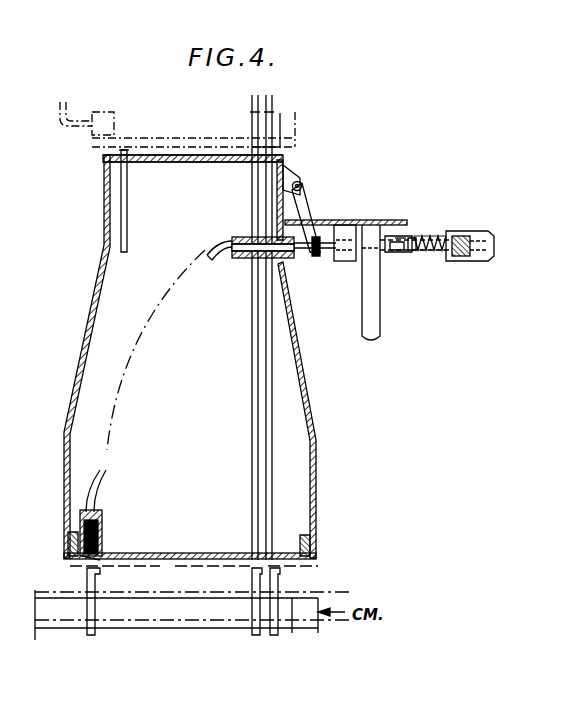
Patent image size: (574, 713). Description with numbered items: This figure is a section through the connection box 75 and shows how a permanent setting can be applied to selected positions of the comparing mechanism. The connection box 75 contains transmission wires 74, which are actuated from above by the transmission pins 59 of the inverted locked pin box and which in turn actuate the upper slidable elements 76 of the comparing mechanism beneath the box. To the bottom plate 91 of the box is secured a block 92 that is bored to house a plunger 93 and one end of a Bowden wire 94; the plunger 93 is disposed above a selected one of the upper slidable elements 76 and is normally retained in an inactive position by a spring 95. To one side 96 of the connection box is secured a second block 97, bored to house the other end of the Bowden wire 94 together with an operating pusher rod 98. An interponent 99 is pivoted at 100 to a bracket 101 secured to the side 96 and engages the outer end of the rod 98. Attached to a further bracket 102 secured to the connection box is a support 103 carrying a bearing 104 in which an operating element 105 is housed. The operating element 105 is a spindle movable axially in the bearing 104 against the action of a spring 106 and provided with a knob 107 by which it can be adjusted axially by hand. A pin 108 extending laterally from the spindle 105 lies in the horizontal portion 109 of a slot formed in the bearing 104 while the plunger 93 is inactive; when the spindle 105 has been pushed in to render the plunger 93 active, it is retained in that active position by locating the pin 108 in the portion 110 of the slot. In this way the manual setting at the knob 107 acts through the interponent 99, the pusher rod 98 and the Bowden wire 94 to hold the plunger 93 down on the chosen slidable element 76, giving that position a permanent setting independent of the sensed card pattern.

The transmission pins 59 is at (266, 124).
The transmission wires 74 is at (121, 203).
The connection box 75 is at (86, 352).
The upper slidable elements 76 is at (88, 577).
The bottom plate 91 is at (180, 555).
The block 92 is at (103, 517).
The plunger 93 is at (96, 560).
The Bowden wire 94 is at (212, 252).
The spring 95 is at (103, 541).
The side 96 is at (306, 388).
The second block 97 is at (240, 258).
The operating pusher rod 98 is at (300, 249).
The interponent 99 is at (306, 203).
The pivot 100 is at (302, 186).
The bracket 101 is at (292, 170).
The bracket 102 is at (357, 221).
The support 103 is at (372, 262).
The bearing 104 is at (406, 253).
The operating element 105 is at (345, 262).
The spring 106 is at (440, 240).
The knob 107 is at (483, 237).
The pin 108 is at (414, 251).
The horizontal portion 109 is at (398, 240).
The slot portion 110 is at (393, 250).